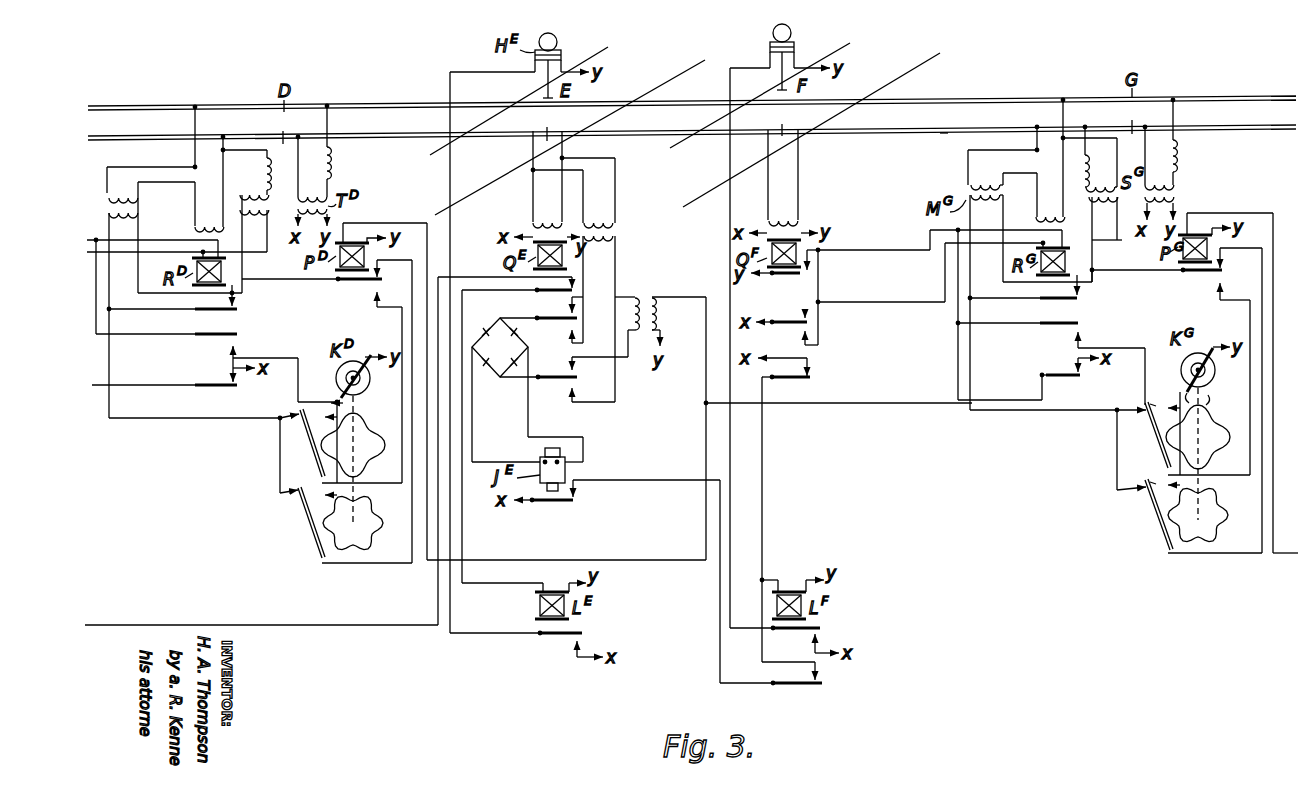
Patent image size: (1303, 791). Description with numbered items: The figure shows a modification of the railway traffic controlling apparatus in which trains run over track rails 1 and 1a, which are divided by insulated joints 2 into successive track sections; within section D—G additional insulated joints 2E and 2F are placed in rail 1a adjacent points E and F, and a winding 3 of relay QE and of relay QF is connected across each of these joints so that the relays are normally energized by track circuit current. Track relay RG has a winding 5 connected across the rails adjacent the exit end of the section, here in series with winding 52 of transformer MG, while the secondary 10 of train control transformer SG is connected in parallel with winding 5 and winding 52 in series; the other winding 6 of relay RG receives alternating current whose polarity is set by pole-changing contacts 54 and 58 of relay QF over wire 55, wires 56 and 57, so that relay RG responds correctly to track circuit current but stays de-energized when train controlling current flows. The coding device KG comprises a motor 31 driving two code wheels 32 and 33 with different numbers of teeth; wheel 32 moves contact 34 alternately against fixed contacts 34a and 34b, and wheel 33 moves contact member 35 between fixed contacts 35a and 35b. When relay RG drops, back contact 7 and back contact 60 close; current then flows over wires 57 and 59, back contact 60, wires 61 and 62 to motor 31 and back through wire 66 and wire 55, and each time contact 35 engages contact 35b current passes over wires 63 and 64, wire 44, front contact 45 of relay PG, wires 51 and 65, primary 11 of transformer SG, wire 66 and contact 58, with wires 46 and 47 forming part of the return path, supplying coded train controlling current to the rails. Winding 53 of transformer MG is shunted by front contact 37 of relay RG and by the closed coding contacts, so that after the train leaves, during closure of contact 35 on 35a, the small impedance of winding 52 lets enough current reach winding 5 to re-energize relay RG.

The track rail 1 is at (910, 116).
The track rail 1a is at (947, 132).
The insulated joint 2 is at (698, 123).
The insulated joint 2E is at (541, 124).
The insulated joint 2F is at (769, 119).
The winding of relay Q 3 is at (547, 179).
The winding of track relay 5 is at (1034, 160).
The winding of track relay 6 is at (1059, 261).
The back contact of relay RG 7 is at (1019, 377).
The secondary of train control transformer 10 is at (1089, 158).
The primary of train control transformer 11 is at (1103, 239).
The motor 31 is at (1217, 373).
The code wheel 32 is at (1229, 433).
The code wheel 33 is at (1230, 535).
The movable contact 34 is at (1158, 446).
The fixed contact 34a is at (1146, 404).
The fixed contact 34b is at (1168, 406).
The movable contact member 35 is at (1160, 540).
The fixed contact 35a is at (1148, 490).
The fixed contact 35b is at (1170, 484).
The front contact of relay RG 37 is at (1077, 298).
The wire 44 is at (1218, 554).
The front contact of relay PG 45 is at (1202, 279).
The wire 46 is at (1014, 411).
The wire 47 is at (1117, 490).
The wire 51 is at (1158, 274).
The winding of transformer MG 52 is at (1003, 157).
The winding of transformer MG 53 is at (986, 302).
The pole-changing contact of relay QF 54 is at (787, 321).
The wire 55 is at (931, 273).
The wire 56 is at (1024, 240).
The wire 57 is at (940, 240).
The pole-changing contact of relay QF 58 is at (783, 298).
The wire 59 is at (957, 312).
The back contact of relay RG 60 is at (1029, 326).
The wire 61 is at (1111, 367).
The wire 62 is at (1220, 400).
The wire 63 is at (1180, 392).
The wire 64 is at (1226, 486).
The wire 65 is at (1092, 268).
The wire 66 is at (1130, 244).